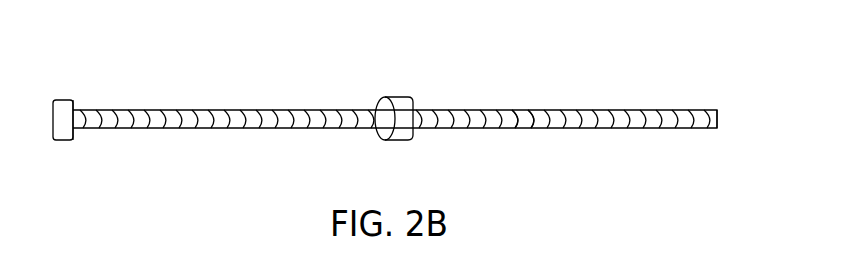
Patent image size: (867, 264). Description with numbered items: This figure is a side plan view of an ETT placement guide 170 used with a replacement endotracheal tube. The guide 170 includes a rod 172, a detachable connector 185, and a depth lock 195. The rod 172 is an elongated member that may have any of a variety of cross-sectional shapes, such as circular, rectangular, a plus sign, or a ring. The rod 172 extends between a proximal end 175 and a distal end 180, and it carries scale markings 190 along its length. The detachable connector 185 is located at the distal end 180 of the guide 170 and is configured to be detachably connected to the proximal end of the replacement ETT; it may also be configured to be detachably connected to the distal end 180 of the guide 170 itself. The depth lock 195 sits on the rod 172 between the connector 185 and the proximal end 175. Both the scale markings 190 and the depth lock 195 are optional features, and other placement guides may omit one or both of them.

The ETT placement guide 170 is at (303, 110).
The rod 172 is at (213, 110).
The proximal end 175 is at (718, 115).
The distal end 180 is at (87, 129).
The detachable connector 185 is at (62, 100).
The scale markings 190 is at (532, 110).
The depth lock 195 is at (393, 97).